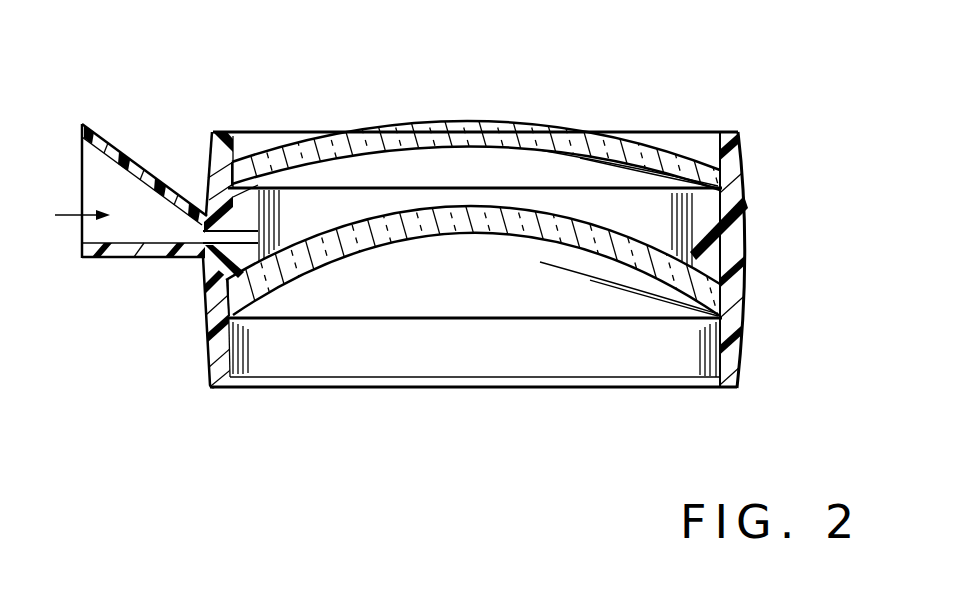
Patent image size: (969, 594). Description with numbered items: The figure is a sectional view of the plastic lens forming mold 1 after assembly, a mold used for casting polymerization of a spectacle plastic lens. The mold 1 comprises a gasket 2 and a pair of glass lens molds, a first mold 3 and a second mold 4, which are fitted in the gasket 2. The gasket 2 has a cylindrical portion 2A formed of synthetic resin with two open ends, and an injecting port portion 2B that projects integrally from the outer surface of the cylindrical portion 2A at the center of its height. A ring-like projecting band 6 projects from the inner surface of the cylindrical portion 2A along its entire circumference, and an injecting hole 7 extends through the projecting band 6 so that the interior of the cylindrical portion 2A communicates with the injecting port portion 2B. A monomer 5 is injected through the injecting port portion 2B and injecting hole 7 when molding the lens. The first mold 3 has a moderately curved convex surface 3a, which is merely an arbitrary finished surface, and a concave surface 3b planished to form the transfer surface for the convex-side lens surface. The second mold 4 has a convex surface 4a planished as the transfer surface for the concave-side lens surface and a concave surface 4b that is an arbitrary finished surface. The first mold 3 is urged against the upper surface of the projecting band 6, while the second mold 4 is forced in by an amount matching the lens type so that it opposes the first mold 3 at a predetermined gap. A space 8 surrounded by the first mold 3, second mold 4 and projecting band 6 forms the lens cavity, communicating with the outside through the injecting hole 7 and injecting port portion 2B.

The plastic lens forming mold 1 is at (487, 28).
The gasket 2 is at (757, 314).
The cylindrical portion 2A is at (748, 276).
The injecting port portion 2B is at (118, 258).
The first mold 3 is at (592, 126).
The convex surface 3a is at (510, 121).
The concave surface 3b is at (355, 168).
The second mold 4 is at (477, 328).
The convex surface 4a is at (324, 226).
The concave surface 4b is at (379, 250).
The monomer 5 is at (65, 212).
The projecting band 6 is at (680, 222).
The injecting hole 7 is at (252, 240).
The space 8 is at (637, 217).